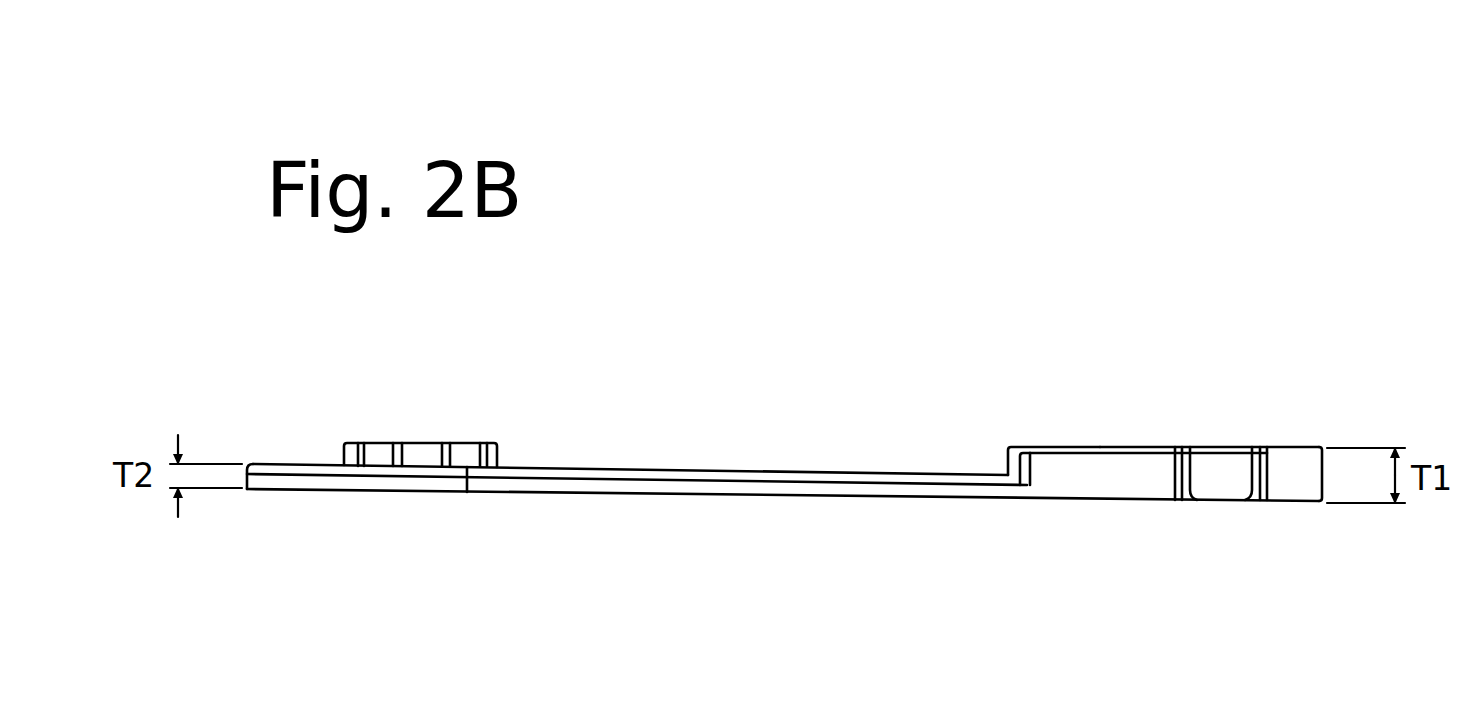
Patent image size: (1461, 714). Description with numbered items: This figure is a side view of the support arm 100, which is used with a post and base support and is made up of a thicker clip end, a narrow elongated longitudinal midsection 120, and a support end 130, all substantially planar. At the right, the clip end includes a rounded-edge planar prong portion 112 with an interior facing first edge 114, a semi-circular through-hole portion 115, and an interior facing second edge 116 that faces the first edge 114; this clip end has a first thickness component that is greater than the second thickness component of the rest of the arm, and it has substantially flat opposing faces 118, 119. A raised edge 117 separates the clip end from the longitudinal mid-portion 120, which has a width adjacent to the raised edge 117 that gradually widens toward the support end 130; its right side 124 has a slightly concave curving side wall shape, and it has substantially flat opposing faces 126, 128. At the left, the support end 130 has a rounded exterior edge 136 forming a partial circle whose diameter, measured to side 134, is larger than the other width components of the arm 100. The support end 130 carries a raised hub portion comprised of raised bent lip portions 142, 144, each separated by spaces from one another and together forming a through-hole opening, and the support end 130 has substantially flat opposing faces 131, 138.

The support arm 100 is at (843, 313).
The prong portion 112 is at (1300, 448).
The interior facing first edge 114 is at (1243, 497).
The semi-circular through-hole portion 115 is at (1223, 497).
The interior facing second edge 116 is at (1197, 500).
The raised edge 117 is at (1005, 460).
The flat opposing face 118 is at (1100, 447).
The flat opposing face 119 is at (1085, 500).
The longitudinal midsection 120 is at (837, 473).
The right side 124 is at (893, 488).
The flat opposing face 126 is at (763, 473).
The flat opposing face 128 is at (750, 496).
The support end 130 is at (345, 375).
The flat opposing face 131 is at (323, 465).
The side 134 is at (400, 486).
The rounded exterior edge 136 is at (243, 480).
The flat opposing face 138 is at (323, 490).
The raised bent lip portion 142 is at (503, 448).
The raised bent lip portion 144 is at (483, 443).